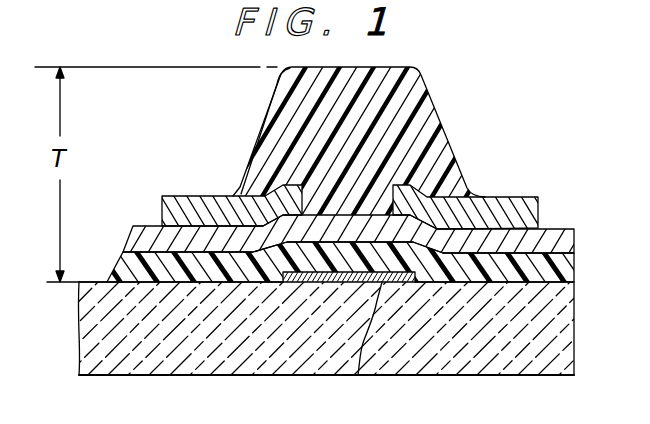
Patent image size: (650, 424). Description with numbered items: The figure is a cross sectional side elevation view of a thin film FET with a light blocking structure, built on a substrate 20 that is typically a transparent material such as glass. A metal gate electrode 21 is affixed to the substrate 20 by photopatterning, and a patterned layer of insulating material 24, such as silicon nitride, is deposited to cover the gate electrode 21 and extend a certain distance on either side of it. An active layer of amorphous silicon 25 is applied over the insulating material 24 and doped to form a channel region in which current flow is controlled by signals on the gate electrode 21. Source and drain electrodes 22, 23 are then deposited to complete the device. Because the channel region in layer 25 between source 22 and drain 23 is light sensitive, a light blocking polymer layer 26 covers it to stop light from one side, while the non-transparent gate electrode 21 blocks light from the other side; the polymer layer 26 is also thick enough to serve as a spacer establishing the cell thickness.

The substrate 20 is at (238, 343).
The gate electrode 21 is at (357, 376).
The source electrode 22 is at (188, 204).
The drain electrode 23 is at (505, 212).
The insulating material layer 24 is at (492, 280).
The active layer of amorphous silicon 25 is at (506, 251).
The light blocking polymer layer 26 is at (417, 88).